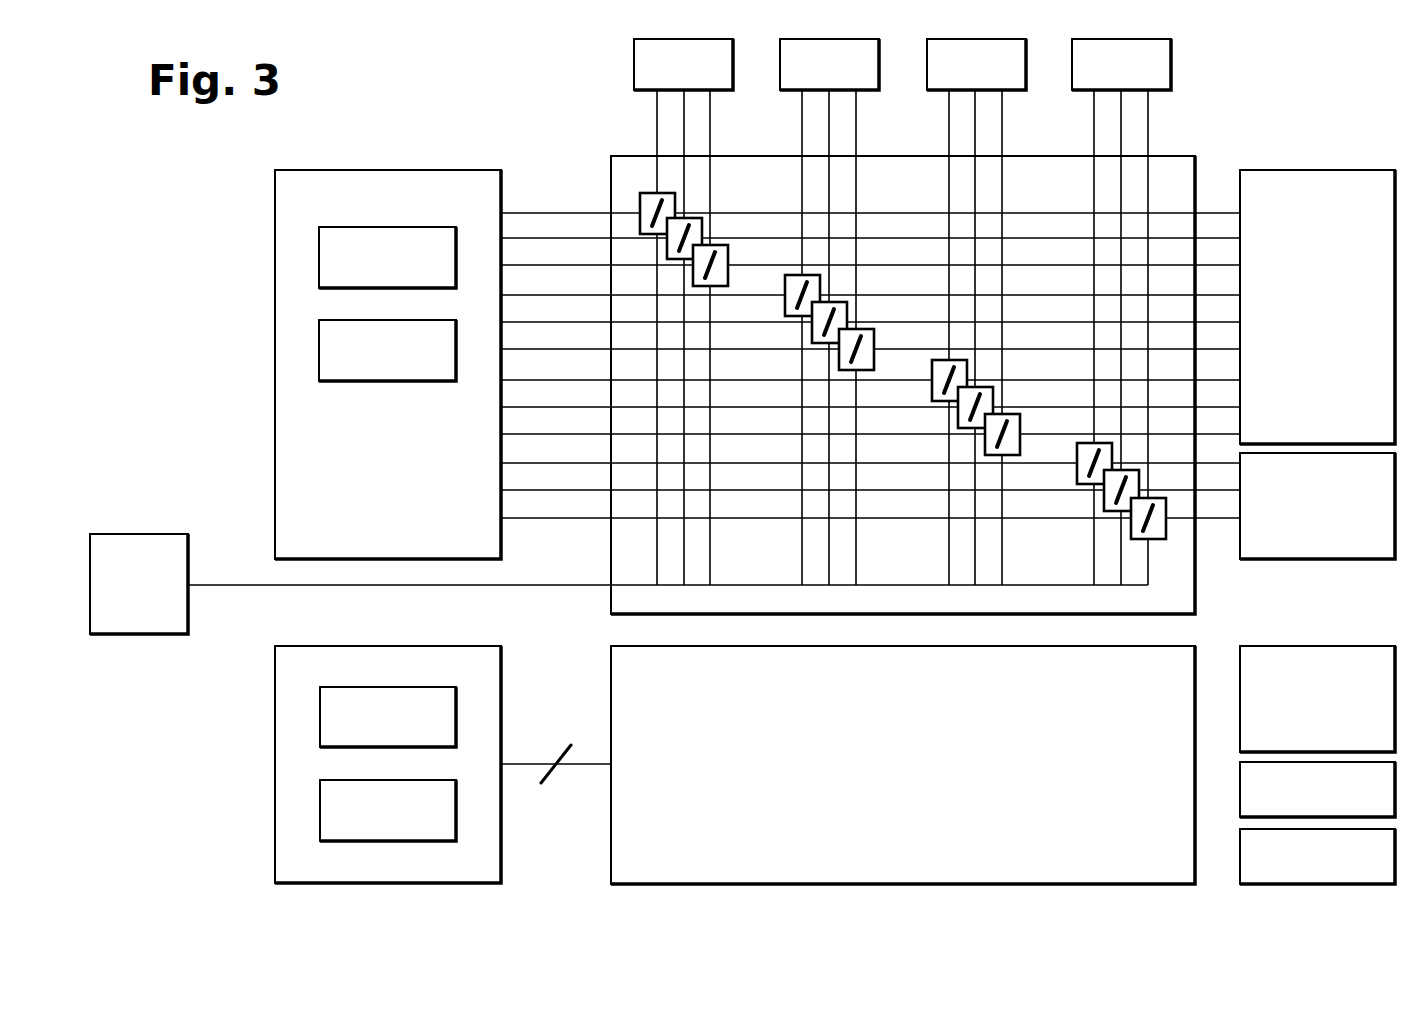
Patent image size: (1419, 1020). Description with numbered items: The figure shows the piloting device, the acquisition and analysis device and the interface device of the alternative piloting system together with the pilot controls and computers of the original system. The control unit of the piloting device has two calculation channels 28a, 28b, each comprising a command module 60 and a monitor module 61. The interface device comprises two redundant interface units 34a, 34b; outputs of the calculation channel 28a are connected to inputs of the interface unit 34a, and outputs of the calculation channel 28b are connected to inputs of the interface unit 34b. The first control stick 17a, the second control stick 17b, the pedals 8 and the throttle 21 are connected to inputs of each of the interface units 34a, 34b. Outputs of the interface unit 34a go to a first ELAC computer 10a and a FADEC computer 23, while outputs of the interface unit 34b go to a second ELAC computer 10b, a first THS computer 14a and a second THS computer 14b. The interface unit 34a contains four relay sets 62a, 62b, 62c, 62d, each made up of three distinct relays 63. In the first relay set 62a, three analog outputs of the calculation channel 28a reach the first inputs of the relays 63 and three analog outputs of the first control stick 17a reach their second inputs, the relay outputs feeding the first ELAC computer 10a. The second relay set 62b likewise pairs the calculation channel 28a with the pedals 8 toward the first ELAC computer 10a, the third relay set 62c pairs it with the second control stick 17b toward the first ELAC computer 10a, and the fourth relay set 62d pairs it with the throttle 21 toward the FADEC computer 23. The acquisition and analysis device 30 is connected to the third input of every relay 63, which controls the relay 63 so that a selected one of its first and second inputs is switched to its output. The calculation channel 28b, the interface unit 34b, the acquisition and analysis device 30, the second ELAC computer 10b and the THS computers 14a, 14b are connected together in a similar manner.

The pedals 8 is at (829, 64).
The first ELAC computer 10a is at (1317, 307).
The second ELAC computer 10b is at (1317, 699).
The first THS computer 14a is at (1317, 789).
The second THS computer 14b is at (1317, 856).
The first control stick 17a is at (683, 64).
The second control stick 17b is at (976, 64).
The throttle 21 is at (1121, 64).
The FADEC computer 23 is at (1317, 506).
The calculation channel 28a is at (293, 250).
The calculation channel 28b is at (292, 764).
The acquisition and analysis device 30 is at (619, 584).
The interface unit 34a is at (1180, 162).
The interface unit 34b is at (903, 765).
The command module 60 is at (387, 487).
The monitor module 61 is at (387, 580).
The first relay set 62a is at (627, 172).
The second relay set 62b is at (788, 350).
The third relay set 62c is at (929, 427).
The fourth relay set 62d is at (1082, 506).
The relay 63 is at (675, 198).